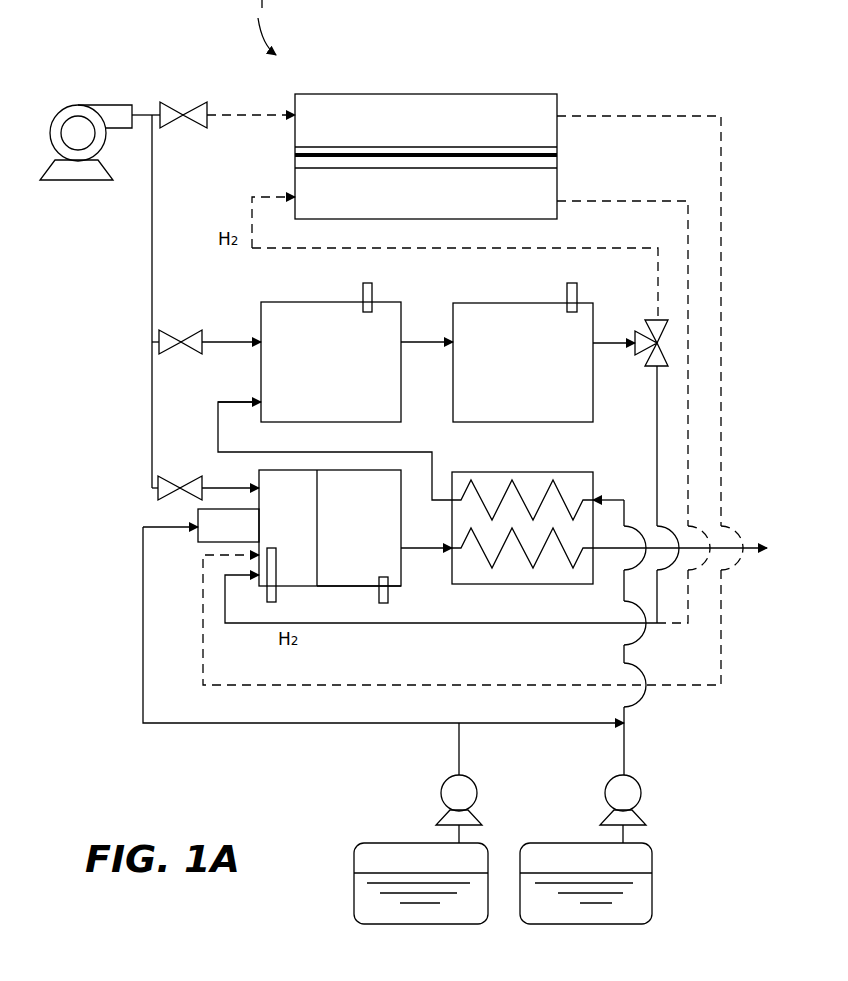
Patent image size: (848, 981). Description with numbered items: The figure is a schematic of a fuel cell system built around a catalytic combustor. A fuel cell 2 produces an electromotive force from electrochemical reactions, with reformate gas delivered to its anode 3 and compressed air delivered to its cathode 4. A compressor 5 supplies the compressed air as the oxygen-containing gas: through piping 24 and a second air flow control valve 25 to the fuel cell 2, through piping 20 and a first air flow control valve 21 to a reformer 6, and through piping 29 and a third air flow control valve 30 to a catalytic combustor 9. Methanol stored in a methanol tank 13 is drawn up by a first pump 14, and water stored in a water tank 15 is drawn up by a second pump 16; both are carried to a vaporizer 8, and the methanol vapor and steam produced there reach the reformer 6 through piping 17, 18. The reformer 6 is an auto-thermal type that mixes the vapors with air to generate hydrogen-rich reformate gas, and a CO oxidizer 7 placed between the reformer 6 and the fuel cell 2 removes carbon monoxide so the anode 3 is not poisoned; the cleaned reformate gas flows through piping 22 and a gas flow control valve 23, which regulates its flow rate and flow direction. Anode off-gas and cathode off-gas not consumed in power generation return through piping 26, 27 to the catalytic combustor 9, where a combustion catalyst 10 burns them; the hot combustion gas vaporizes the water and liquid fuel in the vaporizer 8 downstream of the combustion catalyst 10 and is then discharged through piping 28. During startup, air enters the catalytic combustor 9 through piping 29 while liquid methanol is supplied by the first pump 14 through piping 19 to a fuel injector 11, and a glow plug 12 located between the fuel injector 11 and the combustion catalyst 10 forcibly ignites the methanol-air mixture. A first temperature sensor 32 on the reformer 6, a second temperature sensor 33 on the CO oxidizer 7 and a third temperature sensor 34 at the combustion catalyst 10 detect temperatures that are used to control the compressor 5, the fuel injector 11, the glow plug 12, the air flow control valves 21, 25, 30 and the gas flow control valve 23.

The fuel cell 2 is at (358, 106).
The anode 3 is at (400, 171).
The cathode 4 is at (362, 157).
The compressor 5 is at (48, 133).
The reformer 6 is at (280, 300).
The CO oxidizer 7 is at (502, 302).
The vaporizer 8 is at (486, 473).
The catalytic combustor 9 is at (296, 496).
The combustion catalyst 10 is at (340, 587).
The fuel injector 11 is at (201, 545).
The glow plug 12 is at (274, 600).
The methanol tank 13 is at (354, 890).
The first pump 14 is at (437, 785).
The water tank 15 is at (654, 882).
The second pump 16 is at (641, 793).
The piping 17 is at (496, 725).
The piping 18 is at (626, 752).
The piping 19 is at (270, 725).
The piping 20 is at (229, 340).
The first air flow control valve 21 is at (189, 331).
The piping 22 is at (620, 248).
The gas flow control valve 23 is at (650, 318).
The piping 24 is at (226, 114).
The second air flow control valve 25 is at (176, 104).
The piping 26 is at (628, 200).
The piping 27 is at (692, 118).
The piping 28 is at (693, 557).
The piping 29 is at (212, 483).
The third air flow control valve 30 is at (188, 480).
The first temperature sensor 32 is at (375, 295).
The second temperature sensor 33 is at (578, 293).
The third temperature sensor 34 is at (390, 599).